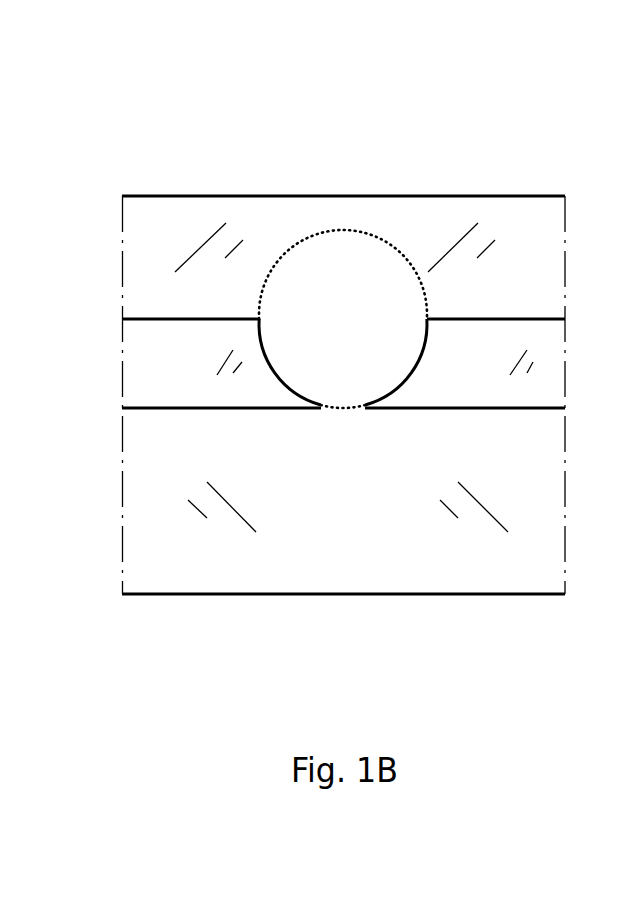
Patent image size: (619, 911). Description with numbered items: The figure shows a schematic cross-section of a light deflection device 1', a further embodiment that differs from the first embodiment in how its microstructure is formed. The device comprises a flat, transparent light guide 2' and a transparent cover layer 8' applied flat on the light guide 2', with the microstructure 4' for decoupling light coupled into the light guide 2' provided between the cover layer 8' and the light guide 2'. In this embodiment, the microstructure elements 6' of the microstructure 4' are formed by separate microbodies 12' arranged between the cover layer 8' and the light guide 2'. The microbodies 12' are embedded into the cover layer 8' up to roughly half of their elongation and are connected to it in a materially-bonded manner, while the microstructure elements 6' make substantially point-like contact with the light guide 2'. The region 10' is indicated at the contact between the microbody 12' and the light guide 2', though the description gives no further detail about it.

The light deflection device 1' is at (326, 325).
The light guide 2' is at (343, 572).
The microstructure 4' is at (314, 363).
The microstructure element 6' is at (368, 362).
The cover layer 8' is at (343, 200).
The opening at bottom of cavity 10' is at (369, 455).
The microbody 12' is at (343, 224).